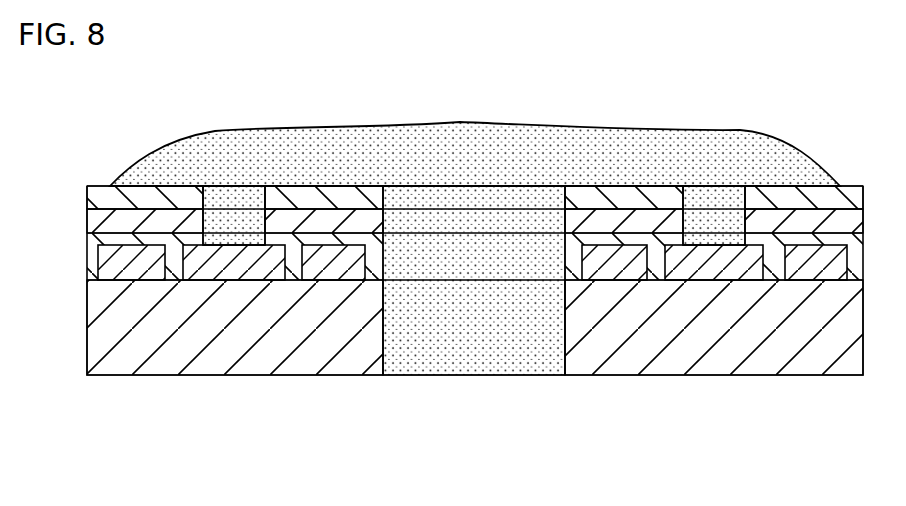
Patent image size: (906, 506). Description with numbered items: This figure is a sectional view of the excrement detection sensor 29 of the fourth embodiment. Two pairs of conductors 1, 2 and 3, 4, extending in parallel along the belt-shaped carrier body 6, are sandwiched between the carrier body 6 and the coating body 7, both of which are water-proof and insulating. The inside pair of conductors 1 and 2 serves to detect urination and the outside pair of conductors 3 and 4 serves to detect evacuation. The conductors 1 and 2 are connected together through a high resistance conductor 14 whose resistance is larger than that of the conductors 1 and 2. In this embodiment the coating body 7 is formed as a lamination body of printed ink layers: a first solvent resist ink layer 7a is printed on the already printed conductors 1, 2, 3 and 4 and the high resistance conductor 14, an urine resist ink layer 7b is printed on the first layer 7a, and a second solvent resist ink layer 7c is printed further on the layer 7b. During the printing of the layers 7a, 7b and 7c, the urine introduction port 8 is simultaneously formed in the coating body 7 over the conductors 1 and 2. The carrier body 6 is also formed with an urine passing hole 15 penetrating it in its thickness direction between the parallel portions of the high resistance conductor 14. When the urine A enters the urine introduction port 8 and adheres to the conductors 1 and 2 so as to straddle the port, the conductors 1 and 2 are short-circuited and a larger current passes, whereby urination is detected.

The conductor 1 is at (243, 267).
The conductor 2 is at (717, 267).
The conductor 3 is at (134, 273).
The conductor 4 is at (815, 270).
The carrier body 6 is at (315, 368).
The coating body 7 is at (441, 227).
The first solvent resist ink layer 7a is at (459, 282).
The urine resist ink layer 7b is at (85, 217).
The second solvent resist ink layer 7c is at (87, 197).
The urine introduction port 8 is at (207, 217).
The high resistance conductor 14 is at (337, 258).
The urine passing hole 15 is at (383, 340).
The excrement detection sensor 29 is at (441, 275).
The urine A is at (455, 152).